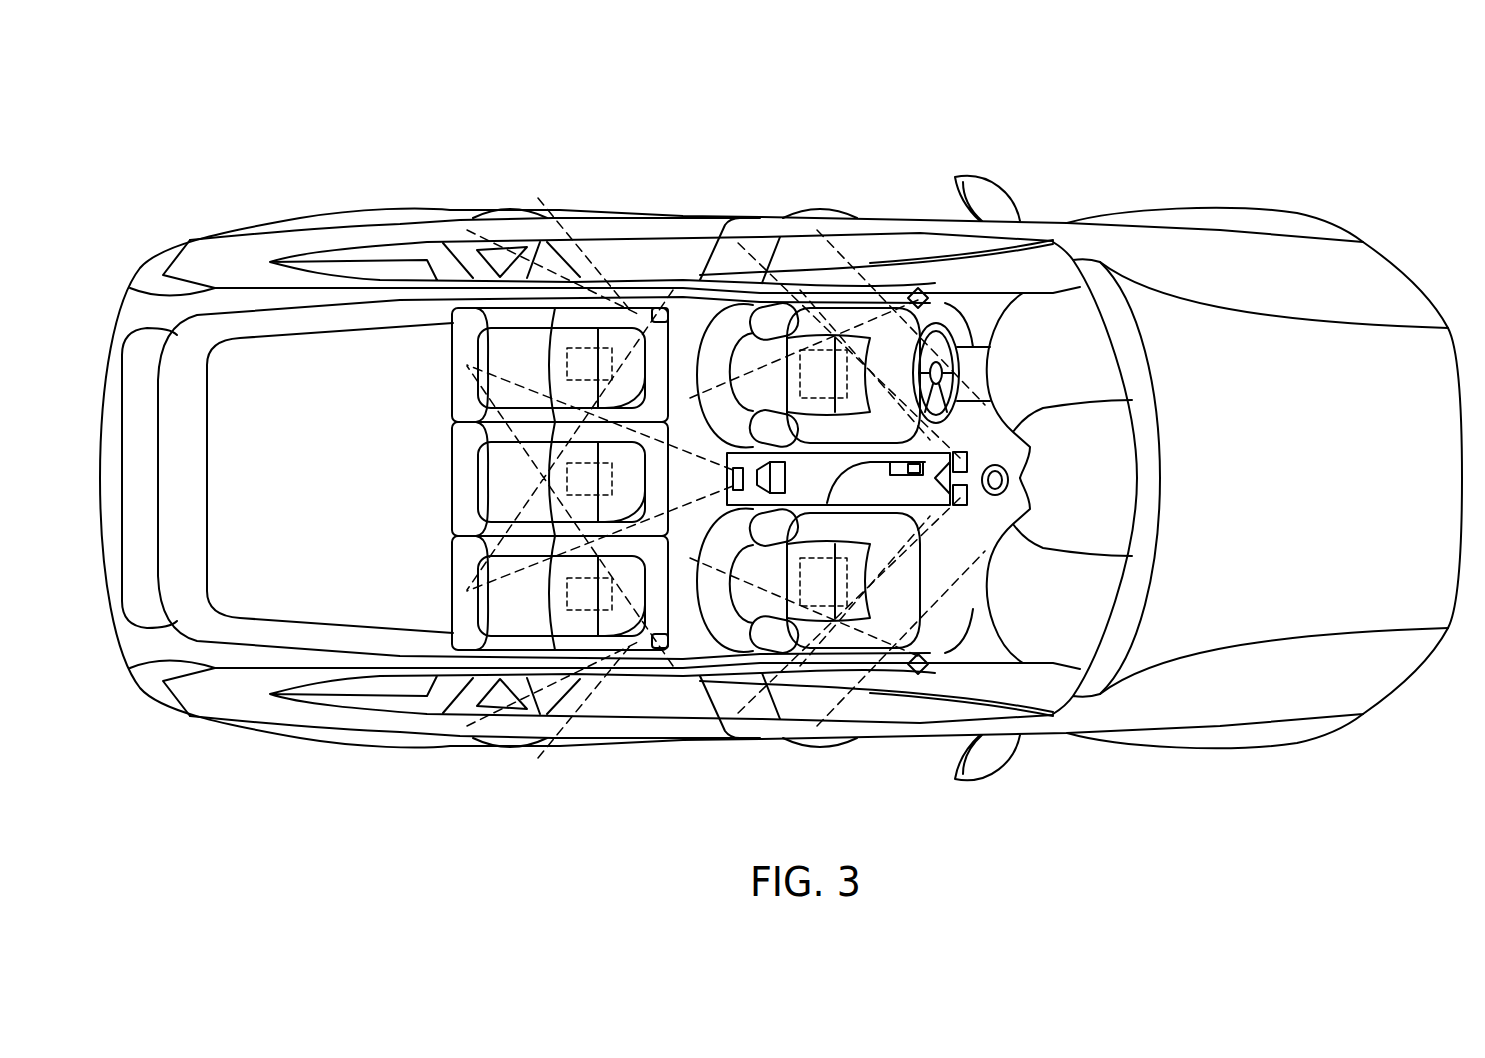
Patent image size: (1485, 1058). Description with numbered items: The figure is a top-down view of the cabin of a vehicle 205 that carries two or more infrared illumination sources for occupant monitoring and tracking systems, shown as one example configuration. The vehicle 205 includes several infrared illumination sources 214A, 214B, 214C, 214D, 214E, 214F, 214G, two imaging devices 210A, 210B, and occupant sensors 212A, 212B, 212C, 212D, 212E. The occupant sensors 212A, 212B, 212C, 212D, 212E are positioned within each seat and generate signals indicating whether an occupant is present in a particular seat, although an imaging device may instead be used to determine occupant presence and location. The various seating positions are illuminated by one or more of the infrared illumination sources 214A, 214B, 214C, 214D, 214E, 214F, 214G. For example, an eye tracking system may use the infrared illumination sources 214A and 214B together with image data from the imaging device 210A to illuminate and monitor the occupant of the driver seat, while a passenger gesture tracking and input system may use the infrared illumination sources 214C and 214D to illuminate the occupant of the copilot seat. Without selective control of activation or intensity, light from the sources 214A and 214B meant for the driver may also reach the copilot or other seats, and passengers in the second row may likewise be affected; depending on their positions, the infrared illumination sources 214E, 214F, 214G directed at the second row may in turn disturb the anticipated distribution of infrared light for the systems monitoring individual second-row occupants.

The vehicle 205 is at (781, 422).
The imaging device 210A is at (1010, 480).
The imaging device 210B is at (776, 460).
The occupant sensor 212A is at (820, 355).
The occupant sensor 212B is at (820, 606).
The occupant sensor 212C is at (567, 365).
The occupant sensor 212D is at (567, 480).
The occupant sensor 212E is at (567, 592).
The infrared illumination source 214A is at (920, 292).
The infrared illumination source 214B is at (963, 452).
The infrared illumination source 214C is at (967, 500).
The infrared illumination source 214D is at (930, 662).
The infrared illumination source 214E is at (655, 315).
The infrared illumination source 214F is at (733, 479).
The infrared illumination source 214G is at (655, 641).